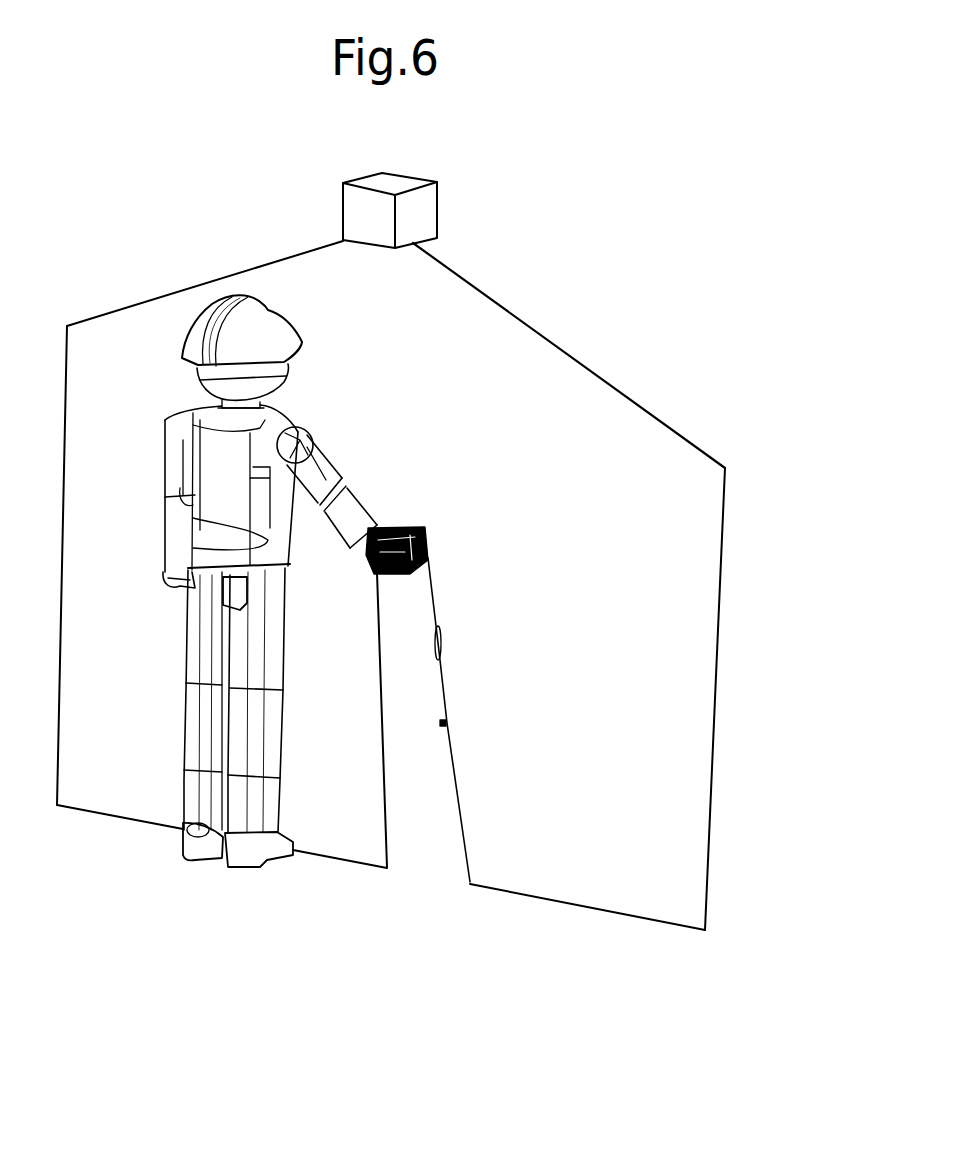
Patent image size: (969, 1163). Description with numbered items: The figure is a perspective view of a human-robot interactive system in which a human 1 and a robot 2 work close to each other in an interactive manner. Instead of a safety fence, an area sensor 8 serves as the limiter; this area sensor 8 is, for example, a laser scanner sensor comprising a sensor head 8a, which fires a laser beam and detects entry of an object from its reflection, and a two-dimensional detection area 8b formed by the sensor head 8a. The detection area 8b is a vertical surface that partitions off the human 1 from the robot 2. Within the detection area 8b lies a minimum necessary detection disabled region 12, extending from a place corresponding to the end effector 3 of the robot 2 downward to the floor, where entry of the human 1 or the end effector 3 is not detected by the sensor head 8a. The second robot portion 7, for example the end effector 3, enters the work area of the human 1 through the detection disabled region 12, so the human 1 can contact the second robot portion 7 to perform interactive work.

The human 1 is at (243, 345).
The robot 2 is at (432, 677).
The end effector 3 is at (427, 538).
The second robot portion 7 is at (397, 587).
The area sensor 8 is at (391, 534).
The sensor head 8a is at (416, 211).
The detection area 8b is at (470, 345).
The detection disabled region 12 is at (422, 610).